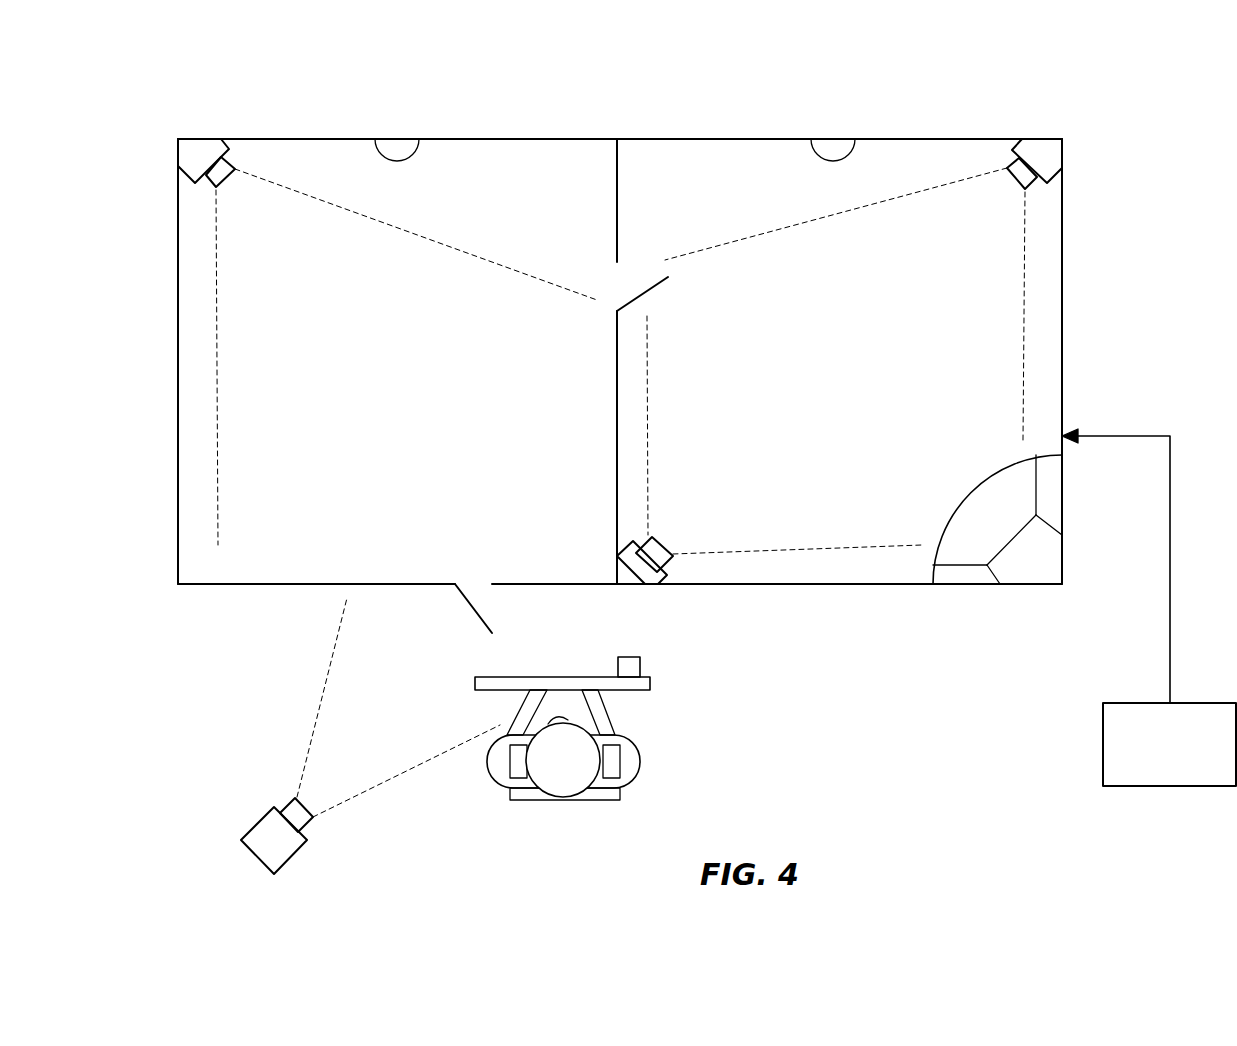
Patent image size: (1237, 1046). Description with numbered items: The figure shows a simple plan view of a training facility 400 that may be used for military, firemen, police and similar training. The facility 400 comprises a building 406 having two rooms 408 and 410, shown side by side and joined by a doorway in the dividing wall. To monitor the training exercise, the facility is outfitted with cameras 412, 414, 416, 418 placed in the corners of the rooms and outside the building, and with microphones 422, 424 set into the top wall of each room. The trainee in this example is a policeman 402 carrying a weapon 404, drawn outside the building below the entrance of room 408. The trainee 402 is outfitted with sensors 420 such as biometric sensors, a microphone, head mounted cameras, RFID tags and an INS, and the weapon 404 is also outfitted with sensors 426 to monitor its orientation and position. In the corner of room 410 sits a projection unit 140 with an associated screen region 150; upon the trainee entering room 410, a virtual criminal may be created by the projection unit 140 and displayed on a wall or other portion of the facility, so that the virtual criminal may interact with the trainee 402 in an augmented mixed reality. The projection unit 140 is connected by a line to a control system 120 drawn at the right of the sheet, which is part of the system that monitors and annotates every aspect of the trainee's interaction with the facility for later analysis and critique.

The training facility 400 is at (1115, 121).
The policeman 402 is at (593, 736).
The weapon 404 is at (565, 677).
The building 406 is at (653, 138).
The room 408 is at (388, 356).
The room 410 is at (815, 356).
The camera 412 is at (262, 850).
The camera 414 is at (192, 147).
The camera 416 is at (1040, 147).
The camera 418 is at (640, 570).
The sensors 420 is at (552, 720).
The microphone 422 is at (398, 148).
The microphone 424 is at (833, 148).
The sensors 426 is at (640, 668).
The control system 120 is at (1150, 702).
The projection unit 140 is at (1035, 572).
The training facility 150 is at (935, 574).